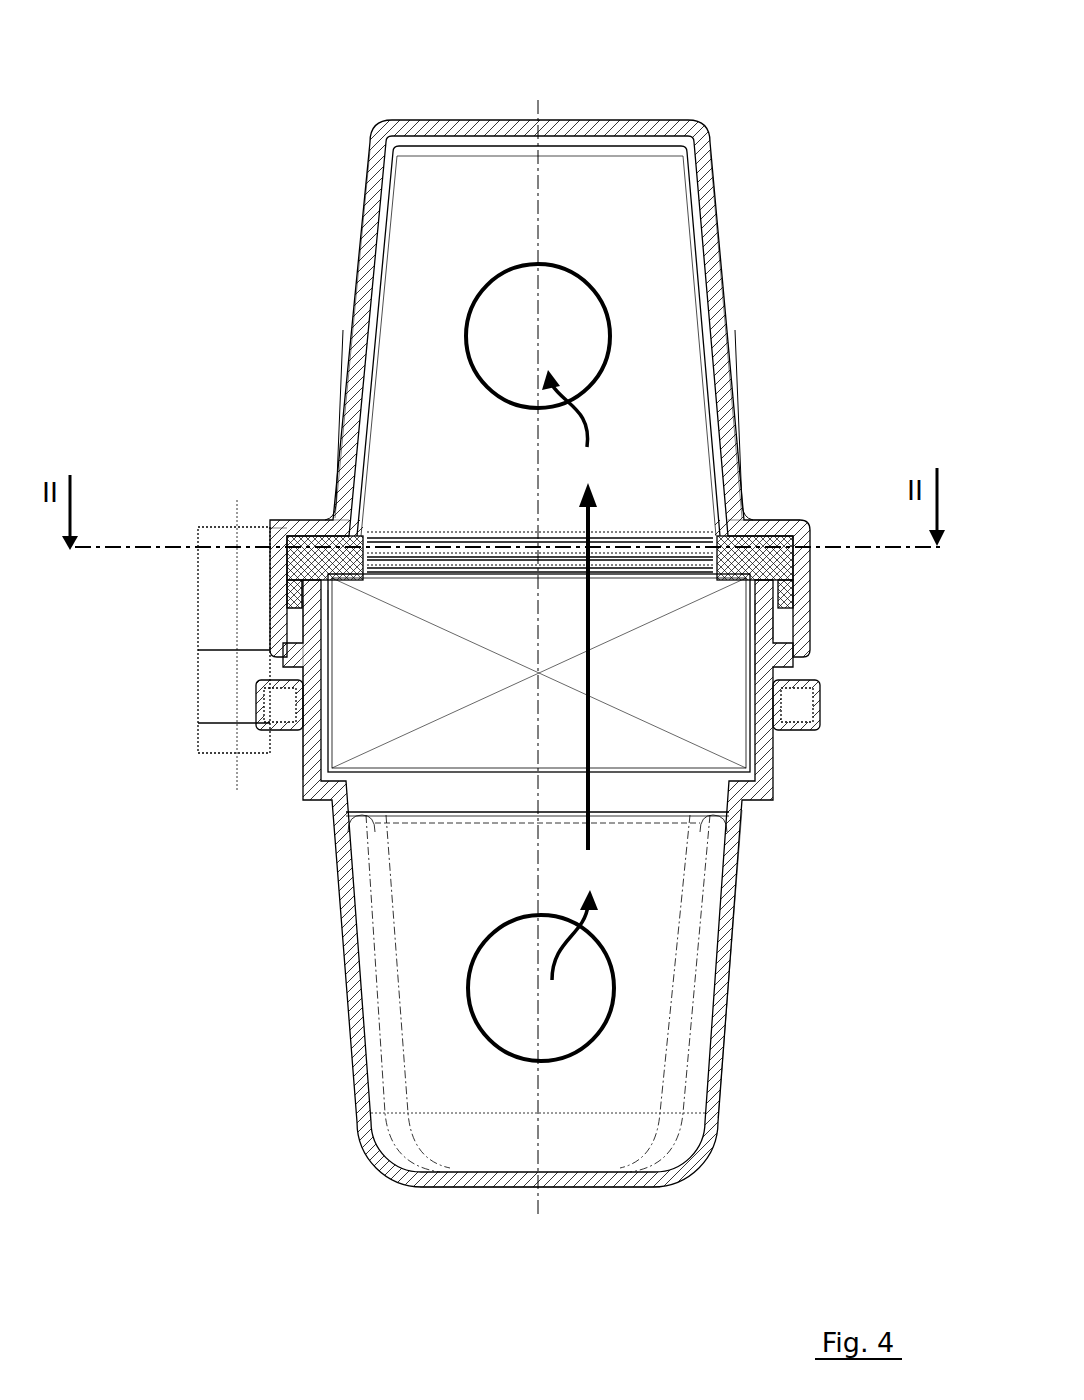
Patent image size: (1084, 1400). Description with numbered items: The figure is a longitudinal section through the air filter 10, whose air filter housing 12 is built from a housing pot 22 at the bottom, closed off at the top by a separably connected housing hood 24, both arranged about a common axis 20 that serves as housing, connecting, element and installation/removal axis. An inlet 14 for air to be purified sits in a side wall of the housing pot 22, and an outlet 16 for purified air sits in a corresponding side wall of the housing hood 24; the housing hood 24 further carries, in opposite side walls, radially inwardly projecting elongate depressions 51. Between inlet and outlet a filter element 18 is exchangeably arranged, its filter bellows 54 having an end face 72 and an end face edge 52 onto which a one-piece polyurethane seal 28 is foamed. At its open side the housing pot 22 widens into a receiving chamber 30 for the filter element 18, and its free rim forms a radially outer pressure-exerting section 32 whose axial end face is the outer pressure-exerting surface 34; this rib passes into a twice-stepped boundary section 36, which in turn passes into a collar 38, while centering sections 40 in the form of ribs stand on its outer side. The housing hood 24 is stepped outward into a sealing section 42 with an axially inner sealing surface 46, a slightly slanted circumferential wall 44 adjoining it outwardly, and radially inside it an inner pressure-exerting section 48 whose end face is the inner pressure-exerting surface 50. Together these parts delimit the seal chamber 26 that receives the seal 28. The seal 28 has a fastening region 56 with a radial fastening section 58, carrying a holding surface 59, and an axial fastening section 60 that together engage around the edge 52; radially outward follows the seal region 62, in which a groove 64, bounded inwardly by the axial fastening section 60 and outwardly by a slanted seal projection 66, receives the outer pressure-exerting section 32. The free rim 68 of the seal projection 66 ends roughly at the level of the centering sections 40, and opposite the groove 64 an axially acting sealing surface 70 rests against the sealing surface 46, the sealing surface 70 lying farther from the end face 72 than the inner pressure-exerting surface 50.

The air filter 10 is at (208, 64).
The air filter housing 12 is at (360, 142).
The inlet 14 is at (560, 1034).
The outlet 16 is at (507, 298).
The filter element 18 is at (703, 788).
The axis 20 is at (538, 1200).
The housing pot 22 is at (703, 1138).
The housing hood 24 is at (717, 172).
The seal chamber 26 is at (795, 585).
The seal 28 is at (278, 576).
The receiving chamber 30 is at (403, 785).
The outer pressure-exerting section 32 is at (770, 620).
The outer pressure-exerting surface 34 is at (765, 590).
The boundary section 36 is at (765, 660).
The collar 38 is at (812, 705).
The centering sections 40 is at (795, 632).
The sealing section 42 is at (760, 518).
The circumferential wall 44 is at (792, 598).
The sealing surface 46 is at (792, 527).
The inner pressure-exerting section 48 is at (700, 545).
The inner pressure-exerting surface 50 is at (732, 580).
The depressions 51 is at (342, 347).
The edge 52 is at (332, 585).
The filter bellows 54 is at (509, 736).
The fastening region 56 is at (345, 575).
The radial fastening section 58 is at (372, 562).
The holding surface 59 is at (378, 520).
The axial fastening section 60 is at (330, 600).
The seal region 62 is at (292, 556).
The groove 64 is at (290, 587).
The seal projection 66 is at (284, 600).
The free rim 68 is at (290, 690).
The sealing surface 70 is at (330, 520).
The end face 72 is at (487, 545).